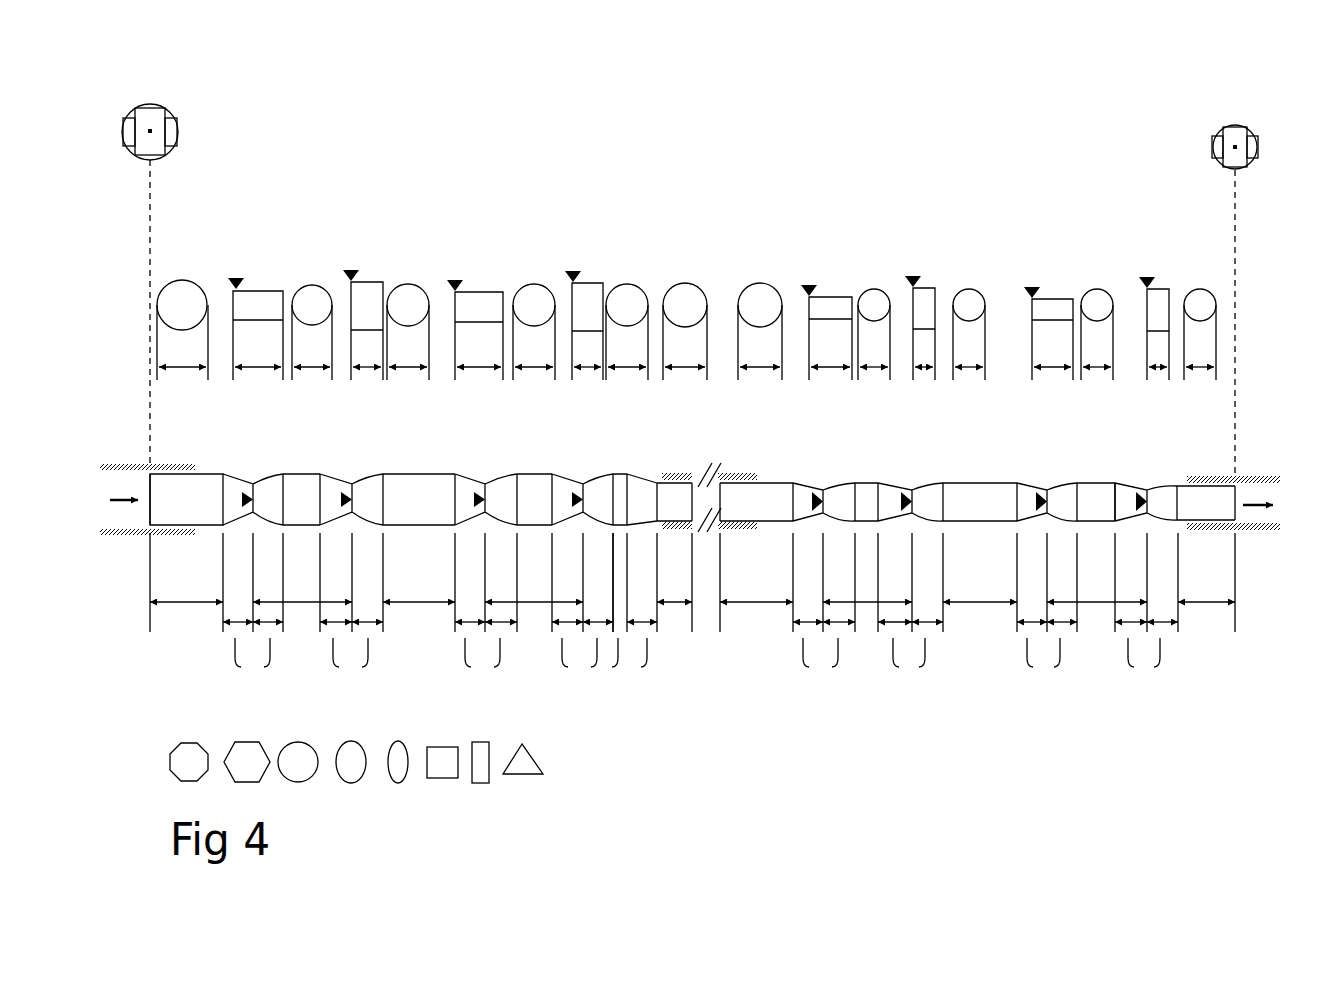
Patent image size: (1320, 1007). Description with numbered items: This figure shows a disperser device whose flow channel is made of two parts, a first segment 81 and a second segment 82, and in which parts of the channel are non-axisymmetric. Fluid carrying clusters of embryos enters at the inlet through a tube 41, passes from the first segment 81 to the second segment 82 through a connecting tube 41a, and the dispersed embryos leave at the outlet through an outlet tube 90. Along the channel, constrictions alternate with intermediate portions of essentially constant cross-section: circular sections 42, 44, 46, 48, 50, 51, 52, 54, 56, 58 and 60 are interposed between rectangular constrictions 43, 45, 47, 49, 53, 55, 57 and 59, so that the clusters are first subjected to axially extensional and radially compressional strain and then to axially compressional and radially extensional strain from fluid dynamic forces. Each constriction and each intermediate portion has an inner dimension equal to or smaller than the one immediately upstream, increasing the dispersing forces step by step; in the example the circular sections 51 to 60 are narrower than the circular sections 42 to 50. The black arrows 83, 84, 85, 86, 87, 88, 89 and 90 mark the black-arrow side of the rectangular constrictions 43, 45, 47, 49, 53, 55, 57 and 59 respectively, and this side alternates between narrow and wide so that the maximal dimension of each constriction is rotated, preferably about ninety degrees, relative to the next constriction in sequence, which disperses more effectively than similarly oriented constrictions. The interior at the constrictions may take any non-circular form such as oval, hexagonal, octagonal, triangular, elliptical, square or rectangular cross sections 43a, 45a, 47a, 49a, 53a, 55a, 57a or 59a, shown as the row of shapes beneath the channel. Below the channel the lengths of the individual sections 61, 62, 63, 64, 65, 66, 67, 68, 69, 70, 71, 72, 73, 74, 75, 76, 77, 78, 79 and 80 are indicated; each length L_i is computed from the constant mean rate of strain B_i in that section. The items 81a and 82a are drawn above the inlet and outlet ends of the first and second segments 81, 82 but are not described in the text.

The tube 41 is at (149, 464).
The connecting tube 41a is at (680, 473).
The circular section 42 is at (152, 499).
The rectangular constriction 43 is at (254, 496).
The circular section 44 is at (287, 499).
The rectangular constriction 45 is at (354, 499).
The circular section 46 is at (386, 499).
The rectangular constriction 47 is at (487, 497).
The circular section 48 is at (520, 499).
The rectangular constriction 49 is at (584, 497).
The circular section 50 is at (616, 499).
The circular section 51 is at (659, 500).
The circular section 52 is at (722, 497).
The rectangular constriction 53 is at (824, 500).
The circular section 54 is at (857, 500).
The rectangular constriction 55 is at (915, 500).
The circular section 56 is at (947, 500).
The rectangular constriction 57 is at (1049, 500).
The circular section 58 is at (1080, 500).
The rectangular constriction 59 is at (1150, 500).
The circular section 60 is at (1181, 500).
The section 61 is at (186, 588).
The section 62 is at (253, 661).
The section 63 is at (302, 588).
The section 64 is at (351, 661).
The section 65 is at (419, 588).
The section 66 is at (486, 661).
The section 67 is at (534, 588).
The section 68 is at (582, 661).
The section 69 is at (608, 616).
The section 70 is at (641, 661).
The section 71 is at (674, 588).
The section 72 is at (756, 588).
The section 73 is at (824, 661).
The section 74 is at (867, 588).
The section 75 is at (910, 661).
The section 76 is at (980, 588).
The section 77 is at (1047, 661).
The section 78 is at (1097, 588).
The section 79 is at (1146, 661).
The section 80 is at (1206, 588).
The first segment 81 is at (205, 472).
The input fiber / light source 81a is at (178, 122).
The second segment 82 is at (1110, 487).
The output fiber / detector 82a is at (1213, 142).
The black arrow side 83 is at (236, 371).
The black arrow side 84 is at (351, 371).
The black arrow side 85 is at (462, 371).
The black arrow side 86 is at (571, 371).
The black arrow side 87 is at (809, 373).
The black arrow side 88 is at (913, 373).
The black arrow side 89 is at (1031, 373).
The outlet tube 90 is at (1205, 476).
The cross section 43a is at (537, 760).
The cross section 45a is at (247, 762).
The cross section 47a is at (298, 762).
The cross section 49a is at (351, 762).
The cross section 53a is at (398, 762).
The cross section 55a is at (442, 762).
The cross section 57a is at (480, 762).
The cross section 59a is at (523, 759).